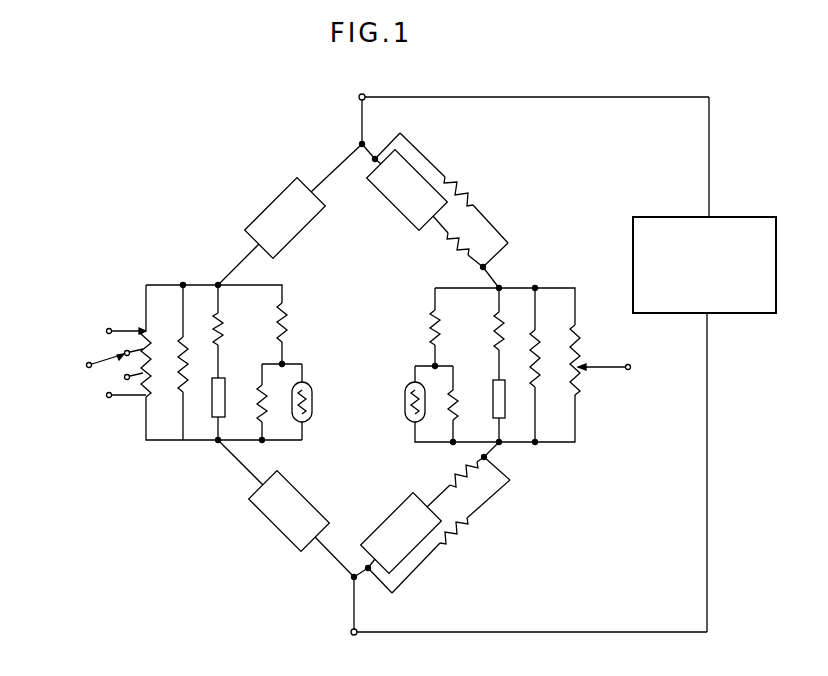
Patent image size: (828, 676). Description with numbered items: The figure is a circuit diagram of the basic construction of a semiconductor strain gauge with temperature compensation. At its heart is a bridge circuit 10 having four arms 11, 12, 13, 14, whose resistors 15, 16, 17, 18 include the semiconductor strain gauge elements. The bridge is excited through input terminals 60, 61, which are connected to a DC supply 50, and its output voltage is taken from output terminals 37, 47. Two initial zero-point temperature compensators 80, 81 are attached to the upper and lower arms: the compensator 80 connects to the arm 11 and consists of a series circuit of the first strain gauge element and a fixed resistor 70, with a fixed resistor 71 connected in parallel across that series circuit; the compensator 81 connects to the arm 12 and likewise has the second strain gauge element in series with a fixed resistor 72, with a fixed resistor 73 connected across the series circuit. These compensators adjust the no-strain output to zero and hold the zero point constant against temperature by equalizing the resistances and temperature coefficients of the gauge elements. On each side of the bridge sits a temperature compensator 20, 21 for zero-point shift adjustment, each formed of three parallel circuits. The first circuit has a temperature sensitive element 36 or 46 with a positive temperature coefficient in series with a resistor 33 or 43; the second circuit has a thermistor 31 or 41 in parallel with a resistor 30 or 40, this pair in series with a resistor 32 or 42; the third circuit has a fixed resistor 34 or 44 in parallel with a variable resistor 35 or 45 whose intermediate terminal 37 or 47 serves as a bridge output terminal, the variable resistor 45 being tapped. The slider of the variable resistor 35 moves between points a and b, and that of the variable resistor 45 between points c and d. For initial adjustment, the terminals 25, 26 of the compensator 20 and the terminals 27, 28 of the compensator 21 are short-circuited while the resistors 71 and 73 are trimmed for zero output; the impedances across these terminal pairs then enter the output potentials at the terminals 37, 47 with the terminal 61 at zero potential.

The bridge circuit 10 is at (407, 210).
The arm 11 is at (375, 159).
The arm 12 is at (366, 578).
The arm 13 is at (245, 474).
The arm 14 is at (340, 166).
The resistor 15 is at (388, 200).
The resistor 16 is at (395, 512).
The resistor 17 is at (278, 525).
The resistor 18 is at (278, 193).
The temperature compensator 20 is at (562, 284).
The temperature compensator 21 is at (166, 283).
The terminal 25 is at (501, 284).
The terminal 26 is at (503, 446).
The terminal 27 is at (217, 442).
The terminal 28 is at (218, 284).
The resistor 30 is at (460, 399).
The thermistor 31 is at (403, 400).
The resistor 32 is at (443, 331).
The resistor 33 is at (507, 322).
The fixed resistor 34 is at (542, 387).
The variable resistor 35 is at (587, 351).
The temperature sensitive element 36 is at (507, 398).
The intermediate terminal 37 is at (633, 368).
The resistor 40 is at (257, 400).
The thermistor 41 is at (313, 403).
The resistor 42 is at (286, 320).
The resistor 43 is at (226, 320).
The fixed resistor 44 is at (192, 332).
The variable resistor 45 is at (153, 334).
The temperature sensitive element 46 is at (227, 393).
The intermediate terminal 47 is at (87, 368).
The DC supply 50 is at (740, 217).
The input terminal 60 is at (358, 96).
The input terminal 61 is at (351, 632).
The fixed resistor 70 is at (448, 243).
The fixed resistor 71 is at (458, 190).
The fixed resistor 72 is at (453, 479).
The fixed resistor 73 is at (462, 538).
The initial zero-point temperature compensator 80 is at (457, 200).
The initial zero-point temperature compensator 81 is at (449, 525).
The point a is at (579, 325).
The point b is at (579, 393).
The point c is at (106, 331).
The point d is at (107, 398).